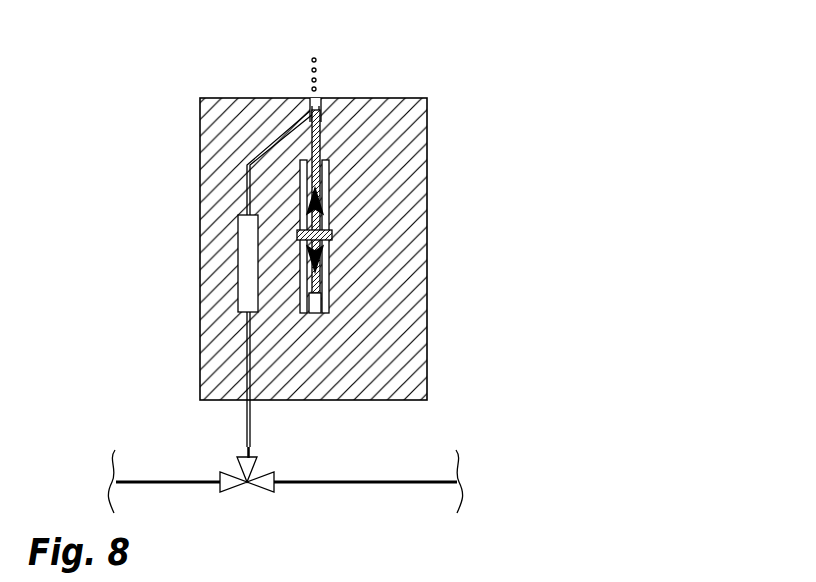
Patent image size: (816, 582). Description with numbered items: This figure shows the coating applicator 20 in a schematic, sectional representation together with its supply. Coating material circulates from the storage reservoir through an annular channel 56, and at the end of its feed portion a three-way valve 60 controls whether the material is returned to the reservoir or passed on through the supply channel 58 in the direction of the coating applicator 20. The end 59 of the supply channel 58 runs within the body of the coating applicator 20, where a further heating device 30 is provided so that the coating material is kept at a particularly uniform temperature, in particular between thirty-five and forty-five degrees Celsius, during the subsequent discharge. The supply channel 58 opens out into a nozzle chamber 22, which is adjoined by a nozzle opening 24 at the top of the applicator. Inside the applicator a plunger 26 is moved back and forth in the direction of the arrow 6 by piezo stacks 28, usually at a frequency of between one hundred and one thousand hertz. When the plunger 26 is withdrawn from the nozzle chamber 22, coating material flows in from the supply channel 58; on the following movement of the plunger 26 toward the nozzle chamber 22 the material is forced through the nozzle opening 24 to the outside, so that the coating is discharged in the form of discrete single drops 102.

The arrow 6 is at (325, 228).
The coating applicator 20 is at (441, 247).
The nozzle chamber 22 is at (343, 98).
The nozzle opening 24 is at (322, 97).
The plunger 26 is at (313, 275).
The piezo stacks 28 is at (305, 163).
The further heating device 30 is at (250, 257).
The annular channel 56 is at (340, 483).
The supply channel 58 is at (246, 445).
The end of the supply channel 59 is at (248, 183).
The three-way valve 60 is at (249, 486).
The discrete single drops 102 is at (318, 64).